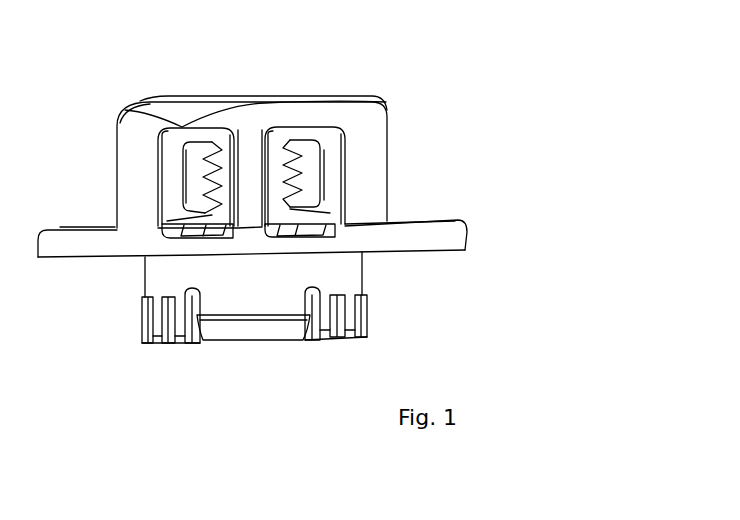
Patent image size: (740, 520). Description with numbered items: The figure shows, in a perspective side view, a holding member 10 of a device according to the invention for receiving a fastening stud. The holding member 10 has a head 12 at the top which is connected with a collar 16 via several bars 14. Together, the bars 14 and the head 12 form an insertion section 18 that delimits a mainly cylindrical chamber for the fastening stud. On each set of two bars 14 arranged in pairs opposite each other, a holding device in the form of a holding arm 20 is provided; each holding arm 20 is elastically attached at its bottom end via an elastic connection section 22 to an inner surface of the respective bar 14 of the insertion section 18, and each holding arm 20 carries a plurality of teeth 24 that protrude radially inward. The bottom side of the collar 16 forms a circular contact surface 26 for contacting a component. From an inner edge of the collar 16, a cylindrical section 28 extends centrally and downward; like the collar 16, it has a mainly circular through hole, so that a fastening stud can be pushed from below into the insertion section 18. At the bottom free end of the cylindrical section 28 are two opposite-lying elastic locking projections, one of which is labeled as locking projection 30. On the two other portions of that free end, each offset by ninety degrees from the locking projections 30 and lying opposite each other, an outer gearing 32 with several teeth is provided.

The holding member 10 is at (520, 88).
The head 12 is at (181, 108).
The bars 14 is at (250, 150).
The collar 16 is at (463, 228).
The insertion section 18 is at (275, 150).
The holding arm 20 is at (187, 168).
The elastic connection section 22 is at (166, 228).
The teeth 24 is at (226, 138).
The contact surface 26 is at (73, 259).
The cylindrical section 28 is at (342, 272).
The locking projection 30 is at (258, 326).
The outer gearing 32 is at (140, 338).